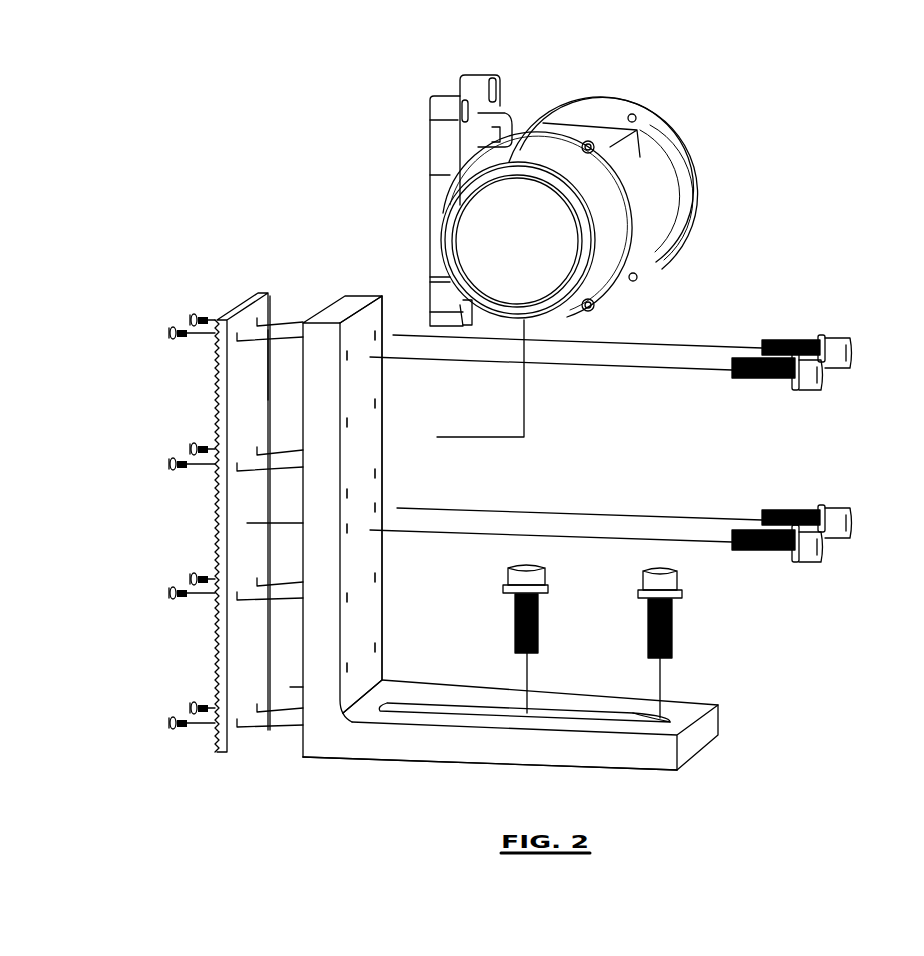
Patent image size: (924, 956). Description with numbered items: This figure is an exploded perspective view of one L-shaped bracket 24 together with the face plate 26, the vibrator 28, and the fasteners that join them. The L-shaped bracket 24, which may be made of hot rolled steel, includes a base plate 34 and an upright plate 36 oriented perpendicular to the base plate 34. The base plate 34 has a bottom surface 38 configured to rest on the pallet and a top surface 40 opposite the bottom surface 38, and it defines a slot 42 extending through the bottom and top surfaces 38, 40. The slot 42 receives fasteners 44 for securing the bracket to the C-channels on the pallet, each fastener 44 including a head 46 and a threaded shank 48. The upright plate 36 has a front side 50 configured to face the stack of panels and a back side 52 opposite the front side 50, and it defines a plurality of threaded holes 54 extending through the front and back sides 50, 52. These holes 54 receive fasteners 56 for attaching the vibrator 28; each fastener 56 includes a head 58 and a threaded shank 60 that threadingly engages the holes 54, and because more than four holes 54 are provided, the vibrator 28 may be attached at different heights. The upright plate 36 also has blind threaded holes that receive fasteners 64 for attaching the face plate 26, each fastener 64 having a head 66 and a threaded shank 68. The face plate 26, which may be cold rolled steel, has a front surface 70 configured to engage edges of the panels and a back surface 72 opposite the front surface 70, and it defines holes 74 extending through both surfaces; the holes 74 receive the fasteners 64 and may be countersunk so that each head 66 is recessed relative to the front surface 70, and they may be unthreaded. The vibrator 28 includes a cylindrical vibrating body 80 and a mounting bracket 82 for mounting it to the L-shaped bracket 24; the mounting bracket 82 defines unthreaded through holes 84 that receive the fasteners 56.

The L-shaped bracket 24 is at (367, 292).
The face plate 26 is at (250, 300).
The vibrator 28 is at (577, 70).
The base plate 34 is at (718, 722).
The upright plate 36 is at (340, 308).
The bottom surface 38 is at (570, 775).
The top surface 40 is at (482, 702).
The slot 42 is at (600, 712).
The fastener 44 is at (548, 588).
The head 46 is at (543, 569).
The threaded shank 48 is at (540, 622).
The front side 50 is at (303, 687).
The back side 52 is at (363, 615).
The holes 54 is at (349, 356).
The fastener 56 is at (823, 336).
The head 58 is at (848, 340).
The threaded shank 60 is at (792, 340).
The fastener 64 is at (195, 313).
The head 66 is at (191, 316).
The threaded shank 68 is at (203, 317).
The front surface 70 is at (215, 523).
The back surface 72 is at (250, 360).
The holes 74 is at (257, 326).
The cylindrical vibrating body 80 is at (673, 137).
The mounting bracket 82 is at (442, 178).
The unthreaded through holes 84 is at (467, 127).